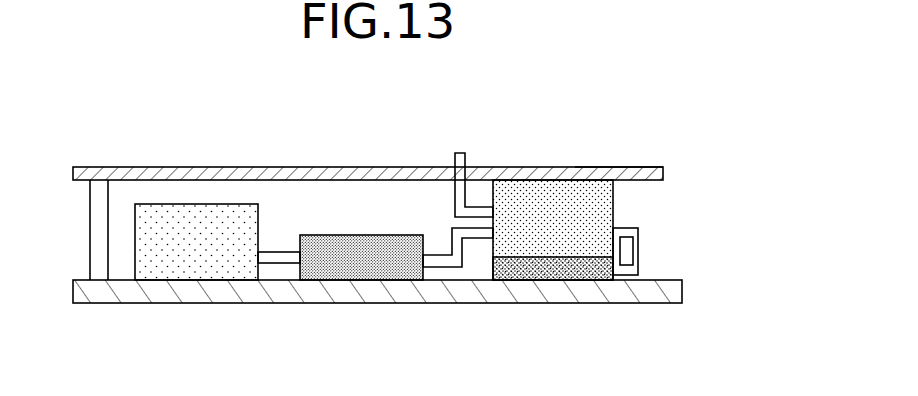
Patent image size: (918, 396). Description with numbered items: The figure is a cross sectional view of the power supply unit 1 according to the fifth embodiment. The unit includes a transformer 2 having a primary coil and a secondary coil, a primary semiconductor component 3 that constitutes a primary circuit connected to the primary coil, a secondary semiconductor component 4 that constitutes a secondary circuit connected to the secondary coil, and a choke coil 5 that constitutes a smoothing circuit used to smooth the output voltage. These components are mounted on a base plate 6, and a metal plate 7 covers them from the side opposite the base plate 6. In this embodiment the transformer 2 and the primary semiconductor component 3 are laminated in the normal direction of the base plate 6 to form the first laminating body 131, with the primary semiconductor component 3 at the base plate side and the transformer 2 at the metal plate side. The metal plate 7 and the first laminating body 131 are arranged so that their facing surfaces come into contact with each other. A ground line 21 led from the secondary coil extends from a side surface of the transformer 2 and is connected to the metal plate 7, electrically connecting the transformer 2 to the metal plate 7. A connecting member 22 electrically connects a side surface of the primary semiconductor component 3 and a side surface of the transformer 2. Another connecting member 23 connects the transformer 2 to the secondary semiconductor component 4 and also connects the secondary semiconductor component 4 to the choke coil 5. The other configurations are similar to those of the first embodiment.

The power supply unit 1 is at (676, 125).
The transformer 2 is at (553, 202).
The primary semiconductor component 3 is at (560, 270).
The secondary semiconductor component 4 is at (367, 270).
The choke coil 5 is at (205, 225).
The base plate 6 is at (466, 292).
The metal plate 7 is at (374, 167).
The ground line 21 is at (459, 188).
The connecting member 22 is at (634, 263).
The connecting member 23 is at (282, 258).
The first laminating body 131 is at (587, 174).